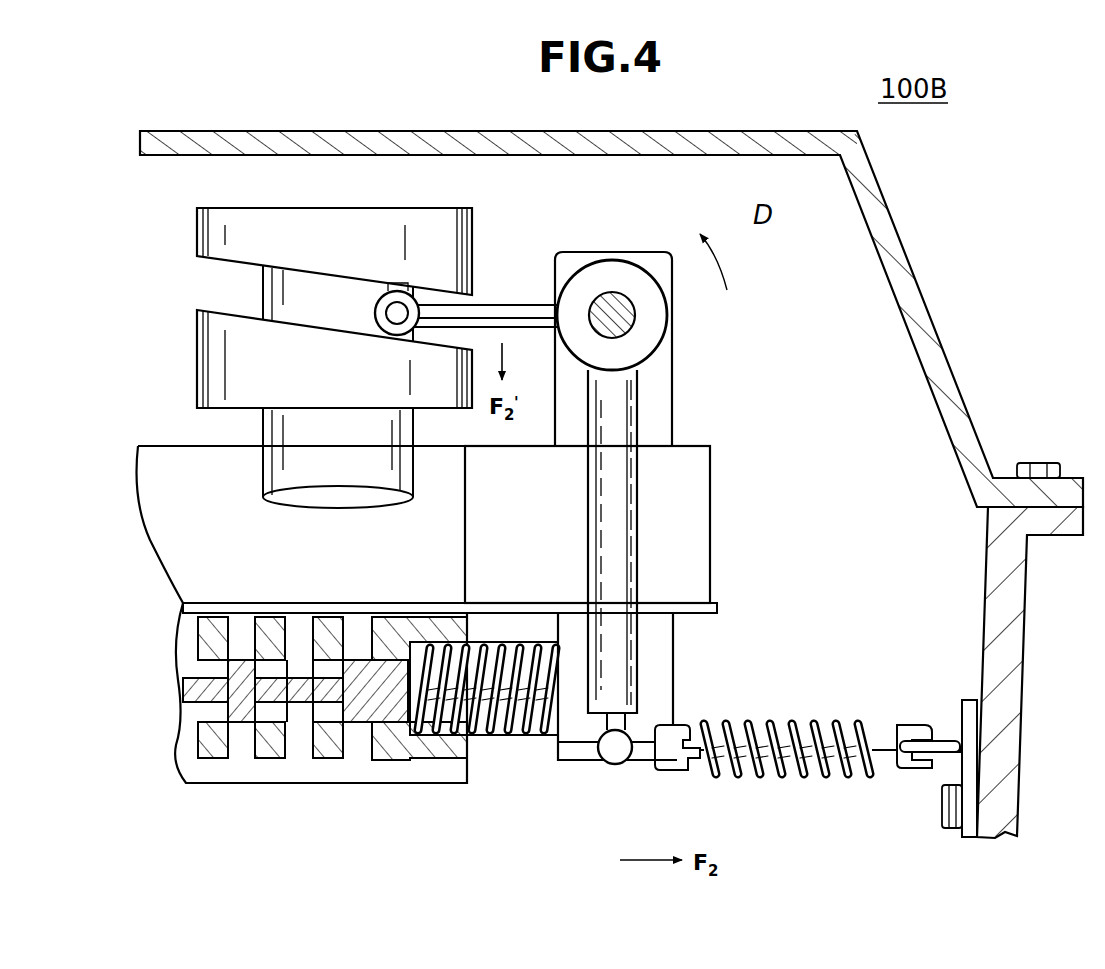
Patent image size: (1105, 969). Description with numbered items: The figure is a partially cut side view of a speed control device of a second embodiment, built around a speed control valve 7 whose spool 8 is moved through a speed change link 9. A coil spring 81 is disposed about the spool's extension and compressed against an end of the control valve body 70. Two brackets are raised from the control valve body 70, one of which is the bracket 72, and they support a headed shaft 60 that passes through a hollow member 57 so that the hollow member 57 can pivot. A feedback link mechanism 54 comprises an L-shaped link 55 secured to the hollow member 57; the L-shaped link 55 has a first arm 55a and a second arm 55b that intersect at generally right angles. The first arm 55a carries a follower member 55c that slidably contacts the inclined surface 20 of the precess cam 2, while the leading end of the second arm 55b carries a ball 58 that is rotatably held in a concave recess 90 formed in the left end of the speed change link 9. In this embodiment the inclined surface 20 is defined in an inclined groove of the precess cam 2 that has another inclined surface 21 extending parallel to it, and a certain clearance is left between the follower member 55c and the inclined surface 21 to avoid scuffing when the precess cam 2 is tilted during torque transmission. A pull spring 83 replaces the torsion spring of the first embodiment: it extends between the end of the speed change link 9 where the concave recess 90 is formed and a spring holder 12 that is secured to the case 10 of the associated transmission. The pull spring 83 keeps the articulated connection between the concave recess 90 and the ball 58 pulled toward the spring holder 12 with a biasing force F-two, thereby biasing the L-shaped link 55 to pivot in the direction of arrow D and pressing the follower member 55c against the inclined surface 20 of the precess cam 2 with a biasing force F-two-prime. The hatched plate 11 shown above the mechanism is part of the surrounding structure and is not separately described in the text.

The precess cam 2 is at (290, 325).
The speed control valve 7 is at (300, 765).
The spool 8 is at (235, 693).
The speed change link 9 is at (668, 665).
The case 10 is at (1015, 637).
The cover plate 11 is at (928, 305).
The spring holder 12 is at (958, 715).
The inclined surface 20 is at (225, 312).
The inclined surface 21 is at (235, 262).
The feedback link mechanism 54 is at (499, 447).
The L-shaped link 55 is at (643, 411).
The first arm 55a is at (497, 300).
The second arm 55b is at (640, 503).
The follower member 55c is at (380, 298).
The hollow member 57 is at (645, 265).
The ball 58 is at (613, 765).
The headed shaft 60 is at (607, 298).
The control valve body 70 is at (158, 446).
The bracket 72 is at (570, 250).
The coil spring 81 is at (510, 735).
The pull spring 83 is at (785, 720).
The concave recess 90 is at (635, 762).